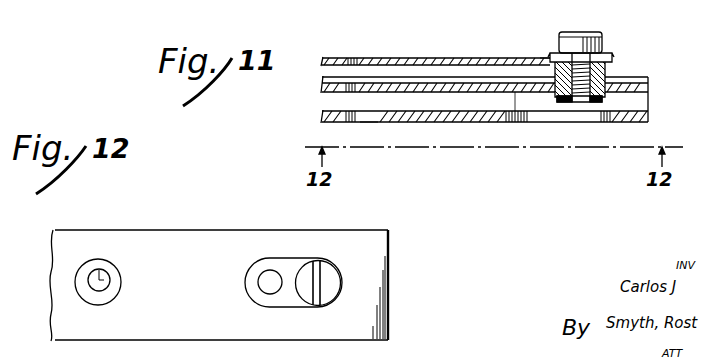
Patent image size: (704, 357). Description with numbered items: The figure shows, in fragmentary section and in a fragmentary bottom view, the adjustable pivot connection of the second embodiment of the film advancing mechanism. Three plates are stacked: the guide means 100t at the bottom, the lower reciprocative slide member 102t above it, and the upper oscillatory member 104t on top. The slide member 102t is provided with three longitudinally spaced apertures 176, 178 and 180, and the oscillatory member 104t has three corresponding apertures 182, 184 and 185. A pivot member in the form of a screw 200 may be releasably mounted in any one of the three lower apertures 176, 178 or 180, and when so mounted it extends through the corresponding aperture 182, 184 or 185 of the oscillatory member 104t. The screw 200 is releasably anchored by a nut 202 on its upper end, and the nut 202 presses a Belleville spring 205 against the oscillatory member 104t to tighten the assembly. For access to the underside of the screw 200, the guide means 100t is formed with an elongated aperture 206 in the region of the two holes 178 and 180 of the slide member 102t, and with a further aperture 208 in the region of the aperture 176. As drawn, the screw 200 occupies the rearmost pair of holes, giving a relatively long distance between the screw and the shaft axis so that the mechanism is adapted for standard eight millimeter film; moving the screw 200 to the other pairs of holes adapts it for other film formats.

In FIG. 11, the guide means 100t is at (500, 122).
In FIG. 12, the guide means 100t is at (385, 254).
In FIG. 11, the lower reciprocative slide member 102t is at (455, 92).
In FIG. 11, the upper oscillatory member 104t is at (440, 59).
In FIG. 11, the aperture 176 is at (353, 97).
In FIG. 12, the aperture 176 is at (151, 262).
In FIG. 11, the aperture 178 is at (523, 94).
In FIG. 12, the aperture 178 is at (235, 299).
In FIG. 11, the aperture 180 is at (579, 103).
In FIG. 11, the aperture 182 is at (358, 62).
In FIG. 12, the aperture 182 is at (100, 280).
In FIG. 11, the aperture 184 is at (541, 57).
In FIG. 12, the aperture 184 is at (273, 288).
In FIG. 11, the aperture 185 is at (608, 72).
In FIG. 11, the screw 200 is at (608, 88).
In FIG. 12, the screw 200 is at (308, 272).
In FIG. 11, the nut 202 is at (603, 40).
In FIG. 11, the Belleville spring 205 is at (612, 57).
In FIG. 11, the elongated aperture 206 is at (597, 125).
In FIG. 12, the elongated aperture 206 is at (290, 262).
In FIG. 11, the aperture 208 is at (364, 121).
In FIG. 12, the aperture 208 is at (104, 262).